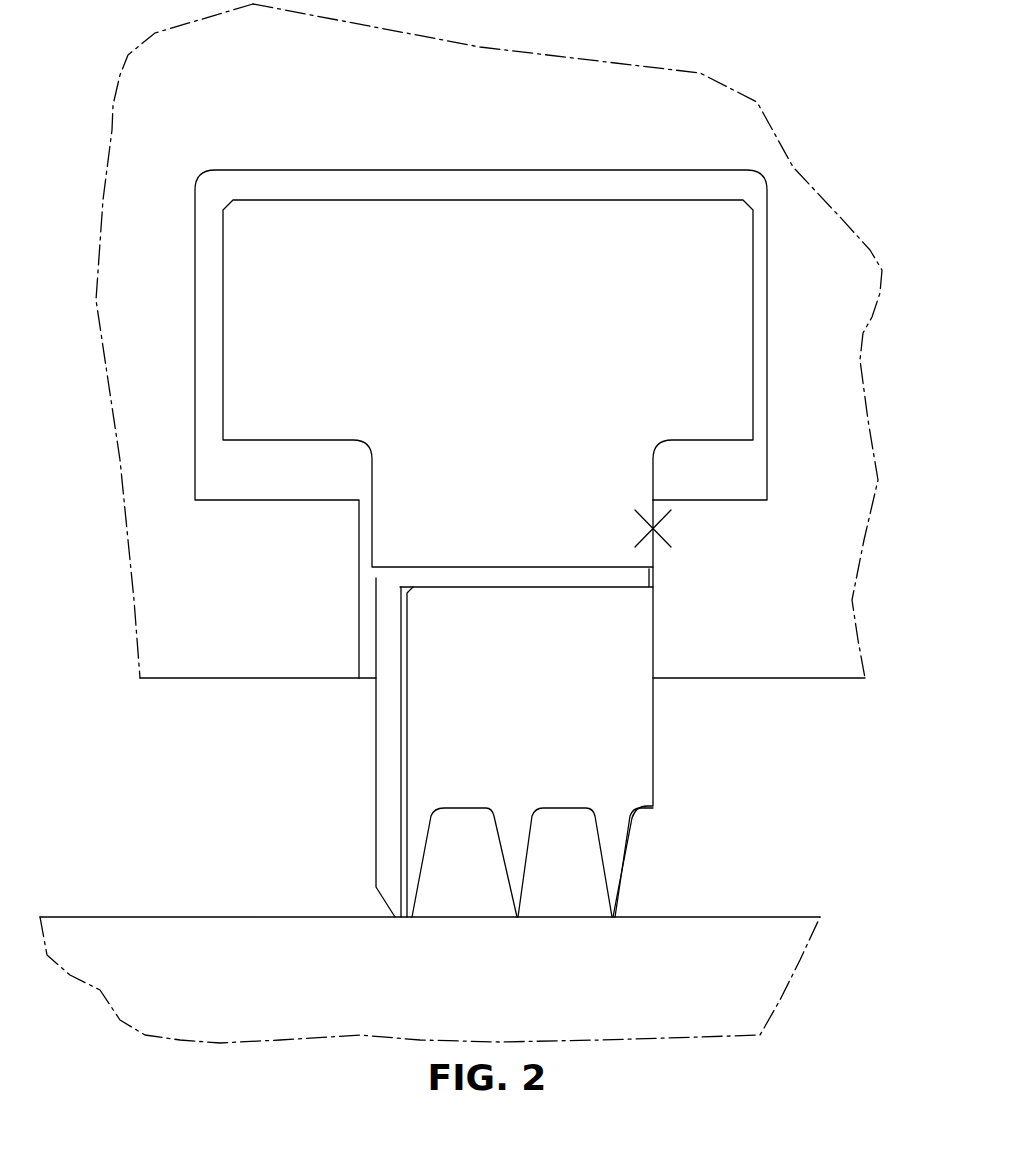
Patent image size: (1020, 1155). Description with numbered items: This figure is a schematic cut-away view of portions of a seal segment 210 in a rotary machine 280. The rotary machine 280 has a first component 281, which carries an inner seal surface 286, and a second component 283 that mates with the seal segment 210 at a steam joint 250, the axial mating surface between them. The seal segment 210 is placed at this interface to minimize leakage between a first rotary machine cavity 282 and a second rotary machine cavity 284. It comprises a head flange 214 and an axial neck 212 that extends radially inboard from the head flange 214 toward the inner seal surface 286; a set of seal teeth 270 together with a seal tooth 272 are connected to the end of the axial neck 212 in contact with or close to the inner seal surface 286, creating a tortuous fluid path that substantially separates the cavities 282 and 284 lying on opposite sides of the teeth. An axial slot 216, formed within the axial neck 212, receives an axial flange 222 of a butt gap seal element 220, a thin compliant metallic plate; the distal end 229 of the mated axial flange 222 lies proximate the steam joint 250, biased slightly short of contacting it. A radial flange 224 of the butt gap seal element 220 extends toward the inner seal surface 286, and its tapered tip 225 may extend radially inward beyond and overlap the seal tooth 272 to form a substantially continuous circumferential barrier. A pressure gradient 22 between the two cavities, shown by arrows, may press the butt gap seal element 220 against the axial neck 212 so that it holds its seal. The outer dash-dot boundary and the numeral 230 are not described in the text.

The rotary machine 280 is at (273, 102).
The seal segment 210 is at (652, 200).
The head flange 214 is at (470, 335).
The heat sink enclosure 230 is at (808, 326).
The pressure gradient 22 is at (620, 556).
The steam joint 250 is at (668, 528).
The butt gap seal element 220 is at (388, 585).
The distal end 229 is at (660, 578).
The second component 283 is at (181, 628).
The axial flange 222 is at (480, 578).
The radial flange 224 is at (402, 673).
The axial slot 216 is at (512, 601).
The second rotary machine cavity 284 is at (140, 770).
The axial neck 212 is at (497, 770).
The first rotary machine cavity 282 is at (723, 811).
The inner seal surface 286 is at (218, 917).
The tip 225 is at (383, 900).
The seal tooth 272 is at (423, 874).
The seal teeth 270 is at (513, 893).
The first component 281 is at (248, 993).